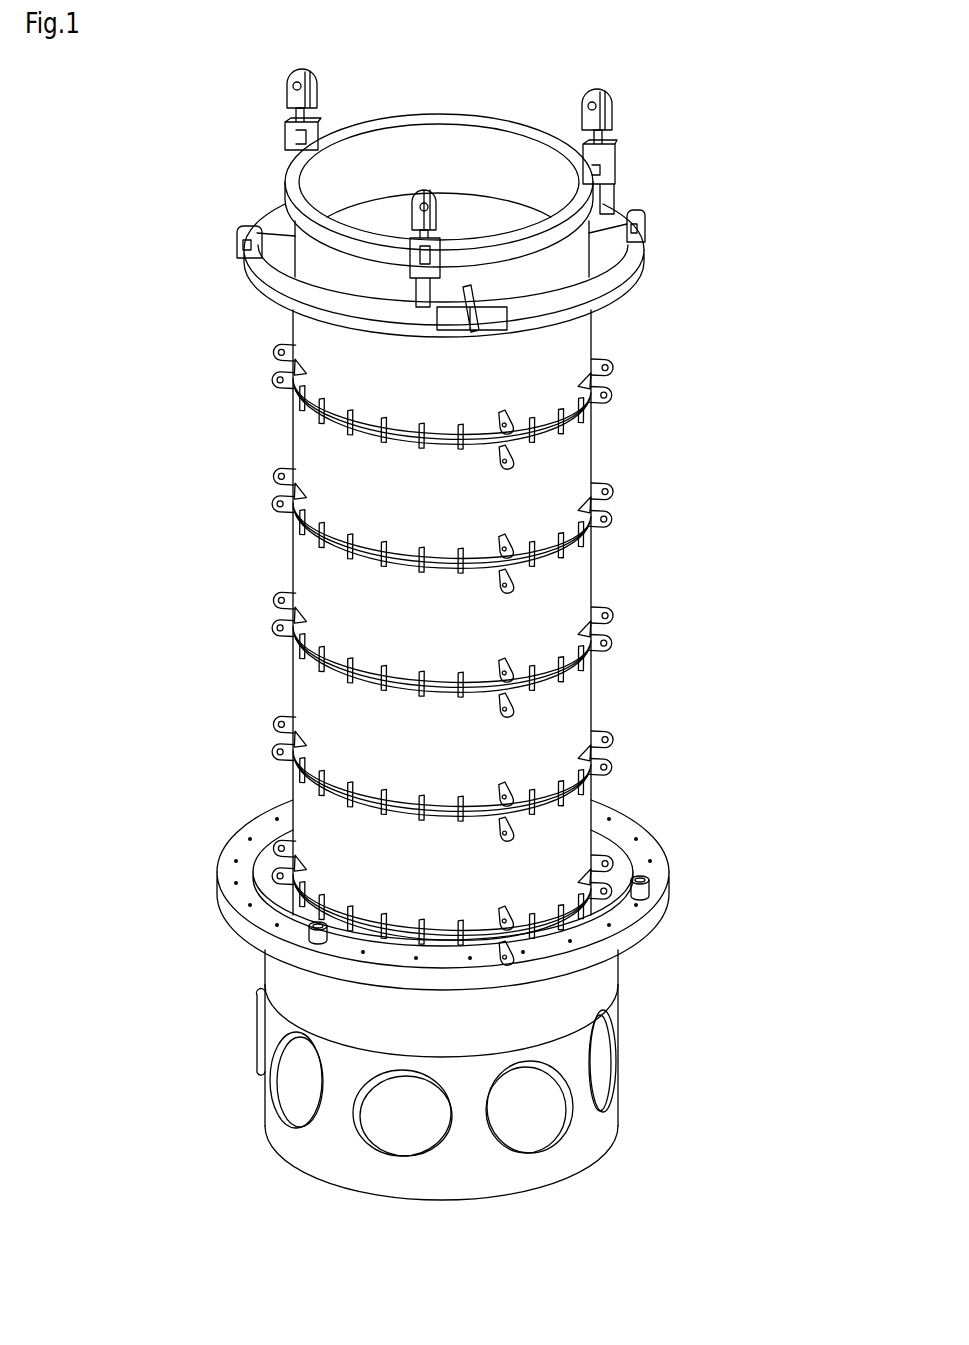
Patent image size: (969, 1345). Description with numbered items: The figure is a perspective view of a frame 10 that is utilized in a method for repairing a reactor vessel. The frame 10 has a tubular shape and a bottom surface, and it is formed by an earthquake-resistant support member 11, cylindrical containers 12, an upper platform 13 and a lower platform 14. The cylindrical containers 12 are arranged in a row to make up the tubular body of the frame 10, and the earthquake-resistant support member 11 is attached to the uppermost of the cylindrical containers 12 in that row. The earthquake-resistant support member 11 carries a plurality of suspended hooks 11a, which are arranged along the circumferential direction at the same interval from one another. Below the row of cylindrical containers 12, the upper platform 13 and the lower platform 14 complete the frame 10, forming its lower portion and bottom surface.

The frame 10 is at (770, 383).
The earthquake-resistant support member 11 is at (598, 262).
The suspended hooks 11a is at (313, 78).
The cylindrical containers 12 is at (557, 363).
The upper platform 13 is at (588, 983).
The lower platform 14 is at (607, 1120).